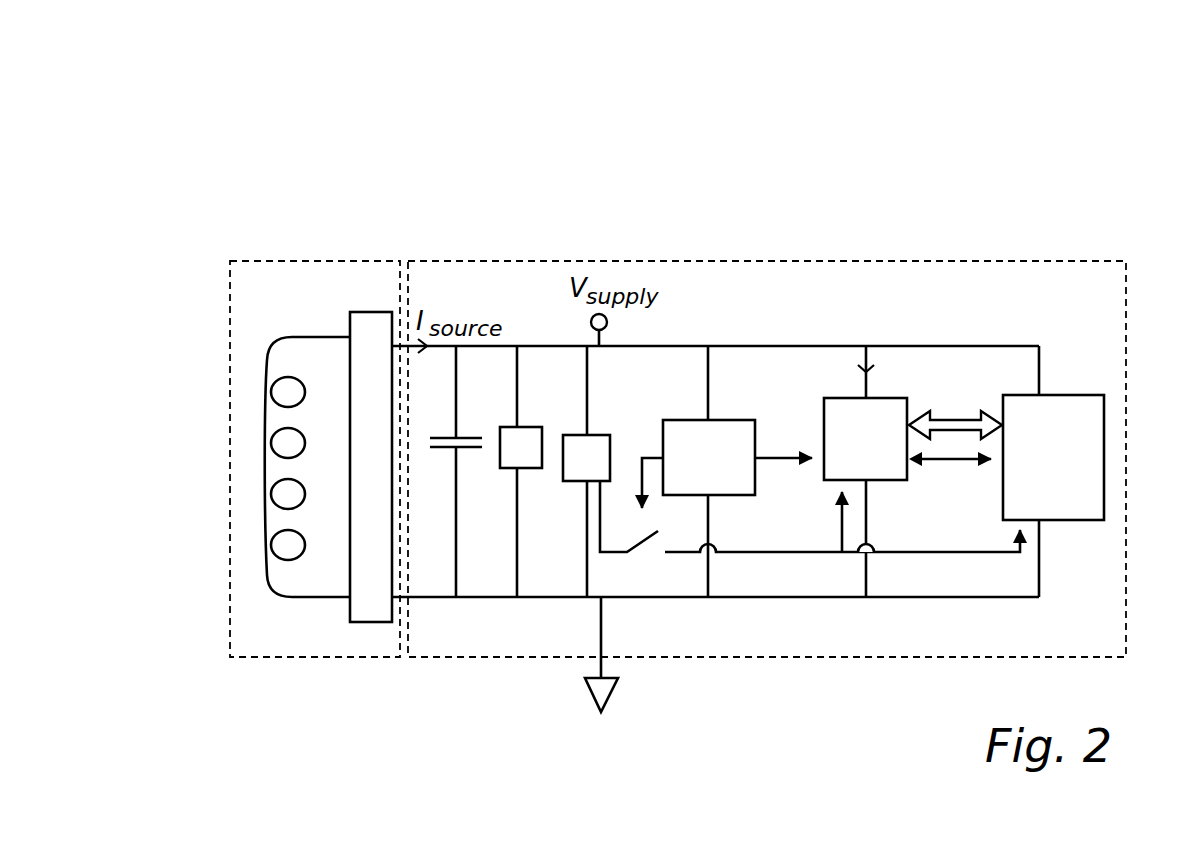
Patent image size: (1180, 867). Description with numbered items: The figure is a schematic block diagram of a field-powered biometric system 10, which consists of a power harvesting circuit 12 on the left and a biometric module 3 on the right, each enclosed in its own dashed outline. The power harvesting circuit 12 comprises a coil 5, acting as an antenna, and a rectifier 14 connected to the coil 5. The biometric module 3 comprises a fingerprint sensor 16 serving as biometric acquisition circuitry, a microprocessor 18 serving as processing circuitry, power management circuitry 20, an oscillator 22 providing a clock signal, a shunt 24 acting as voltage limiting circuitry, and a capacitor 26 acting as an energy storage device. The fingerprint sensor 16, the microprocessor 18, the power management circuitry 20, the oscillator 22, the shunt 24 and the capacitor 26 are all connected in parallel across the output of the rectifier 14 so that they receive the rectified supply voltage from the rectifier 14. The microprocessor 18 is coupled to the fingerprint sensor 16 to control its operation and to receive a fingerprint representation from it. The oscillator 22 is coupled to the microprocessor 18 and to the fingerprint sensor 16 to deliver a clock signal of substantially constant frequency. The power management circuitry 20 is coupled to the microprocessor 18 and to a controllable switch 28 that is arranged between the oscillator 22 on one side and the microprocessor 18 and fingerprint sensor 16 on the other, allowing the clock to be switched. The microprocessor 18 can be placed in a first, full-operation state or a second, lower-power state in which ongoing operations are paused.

The biometric module 3 is at (897, 250).
The coil 5 is at (292, 600).
The field-powered biometric system 10 is at (722, 160).
The power harvesting circuit 12 is at (333, 237).
The rectifier 14 is at (348, 565).
The fingerprint sensor 16 is at (1067, 394).
The microprocessor 18 is at (885, 483).
The power management circuitry 20 is at (720, 498).
The oscillator 22 is at (577, 433).
The shunt 24 is at (498, 450).
The capacitor 26 is at (434, 450).
The controllable switch 28 is at (653, 567).